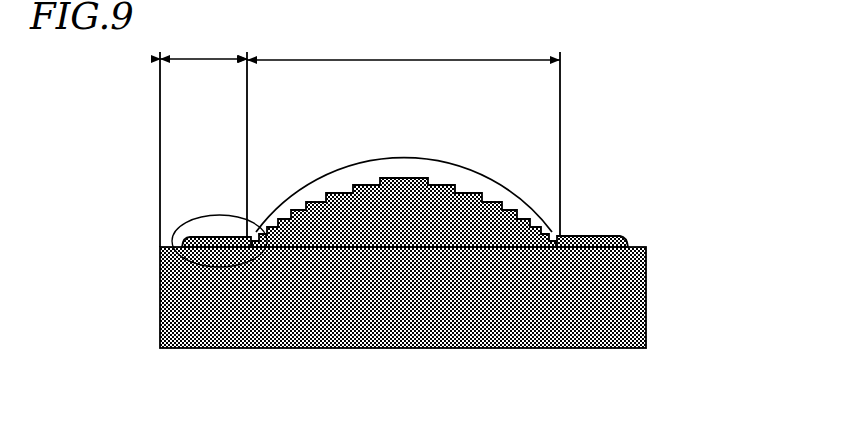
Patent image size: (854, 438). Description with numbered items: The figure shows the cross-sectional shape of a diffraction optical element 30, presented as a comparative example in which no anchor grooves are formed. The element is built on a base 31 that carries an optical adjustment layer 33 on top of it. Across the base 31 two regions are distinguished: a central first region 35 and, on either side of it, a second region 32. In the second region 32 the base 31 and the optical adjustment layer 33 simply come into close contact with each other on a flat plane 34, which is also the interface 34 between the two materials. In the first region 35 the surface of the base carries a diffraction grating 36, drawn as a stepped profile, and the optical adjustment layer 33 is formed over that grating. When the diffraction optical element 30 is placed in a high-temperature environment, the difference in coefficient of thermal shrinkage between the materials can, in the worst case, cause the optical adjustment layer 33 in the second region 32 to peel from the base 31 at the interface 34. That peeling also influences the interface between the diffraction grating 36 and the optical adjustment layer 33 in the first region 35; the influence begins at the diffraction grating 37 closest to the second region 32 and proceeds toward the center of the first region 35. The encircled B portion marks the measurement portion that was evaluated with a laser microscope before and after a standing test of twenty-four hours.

The diffraction optical element 30 is at (412, 256).
The base 31 is at (510, 335).
The second region 32 is at (203, 43).
The optical adjustment layer 33 is at (403, 167).
The plane (interface) 34 is at (156, 247).
The first region 35 is at (403, 45).
The diffraction grating 36 is at (543, 273).
The diffraction grating close to the second region 37 is at (255, 243).
The B portion B is at (218, 215).